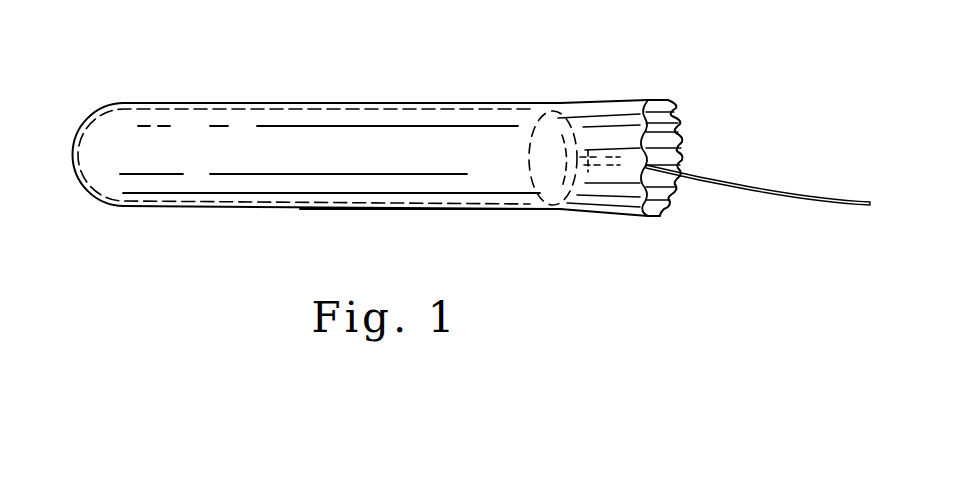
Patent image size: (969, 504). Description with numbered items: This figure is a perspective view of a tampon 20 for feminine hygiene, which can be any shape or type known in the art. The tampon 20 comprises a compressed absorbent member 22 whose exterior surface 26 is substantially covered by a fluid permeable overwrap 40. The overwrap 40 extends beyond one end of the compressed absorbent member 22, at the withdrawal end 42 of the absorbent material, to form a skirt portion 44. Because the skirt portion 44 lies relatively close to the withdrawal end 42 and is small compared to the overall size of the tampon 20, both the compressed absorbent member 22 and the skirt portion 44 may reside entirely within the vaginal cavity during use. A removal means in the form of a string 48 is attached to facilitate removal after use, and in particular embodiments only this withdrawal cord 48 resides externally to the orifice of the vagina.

The tampon 20 is at (126, 94).
The compressed absorbent member 22 is at (193, 167).
The exterior surface 26 is at (358, 112).
The overwrap 40 is at (330, 210).
The withdrawal end 42 is at (552, 114).
The skirt portion 44 is at (600, 213).
The string 48 is at (840, 200).